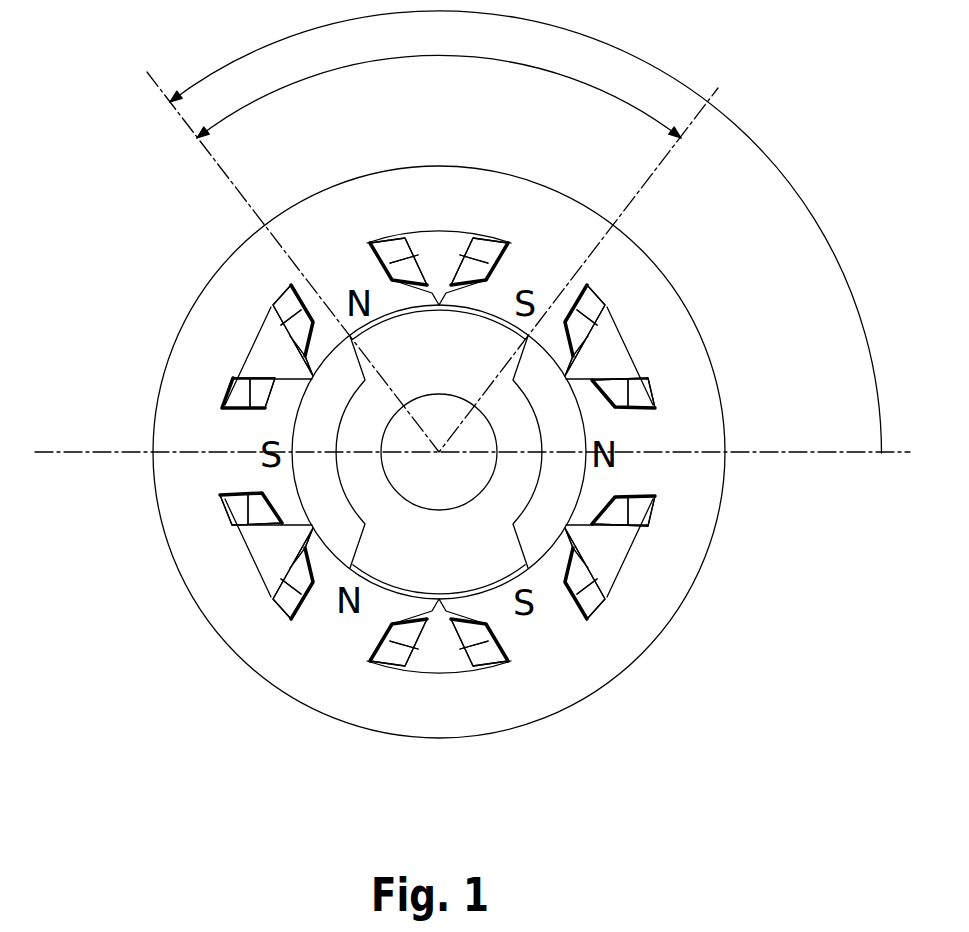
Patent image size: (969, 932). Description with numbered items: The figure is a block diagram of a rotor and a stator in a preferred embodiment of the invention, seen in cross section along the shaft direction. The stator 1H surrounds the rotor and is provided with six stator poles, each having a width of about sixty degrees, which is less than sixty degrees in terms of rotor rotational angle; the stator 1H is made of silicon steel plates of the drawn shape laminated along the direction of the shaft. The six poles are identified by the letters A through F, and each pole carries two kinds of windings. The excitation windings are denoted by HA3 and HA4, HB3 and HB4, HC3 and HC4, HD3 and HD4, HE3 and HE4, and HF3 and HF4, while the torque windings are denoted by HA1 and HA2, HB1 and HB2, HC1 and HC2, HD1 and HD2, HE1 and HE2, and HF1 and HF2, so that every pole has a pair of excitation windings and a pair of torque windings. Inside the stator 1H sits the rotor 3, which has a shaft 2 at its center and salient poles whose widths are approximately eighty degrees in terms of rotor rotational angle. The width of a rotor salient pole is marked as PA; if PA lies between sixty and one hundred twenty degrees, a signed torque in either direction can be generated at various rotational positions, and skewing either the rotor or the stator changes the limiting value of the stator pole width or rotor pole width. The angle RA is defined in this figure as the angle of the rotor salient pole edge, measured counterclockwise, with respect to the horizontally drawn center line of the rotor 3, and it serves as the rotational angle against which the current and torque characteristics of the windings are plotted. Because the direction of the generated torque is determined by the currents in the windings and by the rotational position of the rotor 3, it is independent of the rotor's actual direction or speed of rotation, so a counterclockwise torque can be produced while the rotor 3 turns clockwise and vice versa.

The stator 1H is at (665, 318).
The shaft 2 is at (477, 437).
The rotor 3 is at (400, 561).
The width of the salient pole of the rotor PA is at (439, 85).
The rotational angle RA is at (526, 232).
The torque winding HA1 is at (607, 385).
The torque winding HA2 is at (608, 522).
The excitation winding HA3 is at (637, 393).
The excitation winding HA4 is at (632, 509).
The torque winding HB1 is at (471, 271).
The torque winding HB2 is at (580, 345).
The excitation winding HB3 is at (490, 253).
The excitation winding HB4 is at (596, 318).
The torque winding HC1 is at (297, 333).
The torque winding HC2 is at (412, 275).
The excitation winding HC3 is at (288, 308).
The excitation winding HC4 is at (393, 254).
The torque winding HD1 is at (279, 514).
The torque winding HD2 is at (272, 392).
The excitation winding HD3 is at (242, 512).
The excitation winding HD4 is at (242, 395).
The torque winding HE1 is at (407, 628).
The torque winding HE2 is at (298, 565).
The excitation winding HE3 is at (382, 657).
The excitation winding HE4 is at (288, 590).
The torque winding HF1 is at (580, 567).
The torque winding HF2 is at (465, 630).
The excitation winding HF3 is at (586, 592).
The excitation winding HF4 is at (485, 653).